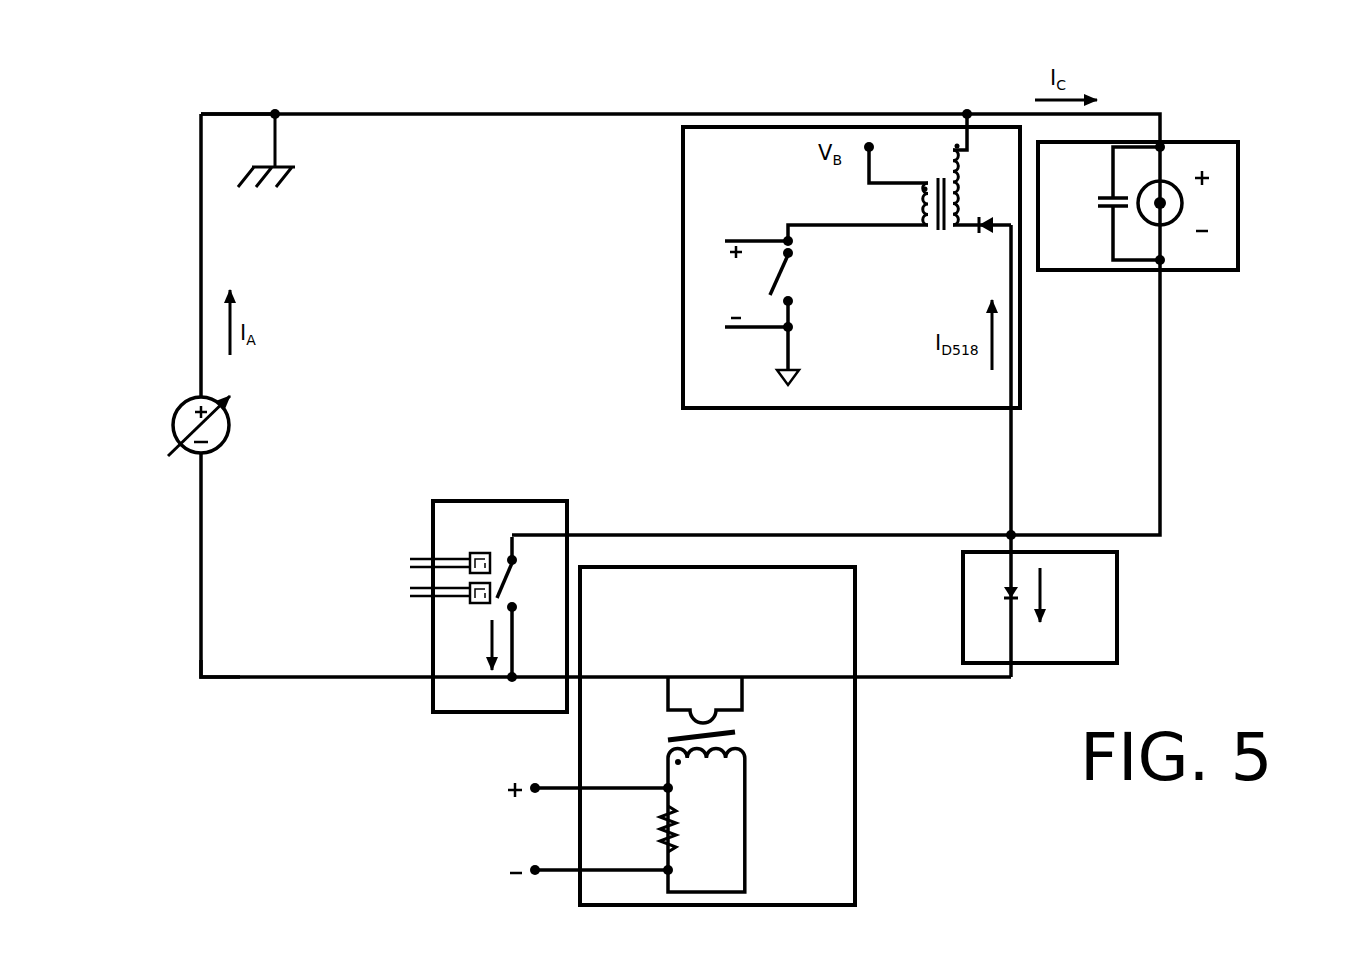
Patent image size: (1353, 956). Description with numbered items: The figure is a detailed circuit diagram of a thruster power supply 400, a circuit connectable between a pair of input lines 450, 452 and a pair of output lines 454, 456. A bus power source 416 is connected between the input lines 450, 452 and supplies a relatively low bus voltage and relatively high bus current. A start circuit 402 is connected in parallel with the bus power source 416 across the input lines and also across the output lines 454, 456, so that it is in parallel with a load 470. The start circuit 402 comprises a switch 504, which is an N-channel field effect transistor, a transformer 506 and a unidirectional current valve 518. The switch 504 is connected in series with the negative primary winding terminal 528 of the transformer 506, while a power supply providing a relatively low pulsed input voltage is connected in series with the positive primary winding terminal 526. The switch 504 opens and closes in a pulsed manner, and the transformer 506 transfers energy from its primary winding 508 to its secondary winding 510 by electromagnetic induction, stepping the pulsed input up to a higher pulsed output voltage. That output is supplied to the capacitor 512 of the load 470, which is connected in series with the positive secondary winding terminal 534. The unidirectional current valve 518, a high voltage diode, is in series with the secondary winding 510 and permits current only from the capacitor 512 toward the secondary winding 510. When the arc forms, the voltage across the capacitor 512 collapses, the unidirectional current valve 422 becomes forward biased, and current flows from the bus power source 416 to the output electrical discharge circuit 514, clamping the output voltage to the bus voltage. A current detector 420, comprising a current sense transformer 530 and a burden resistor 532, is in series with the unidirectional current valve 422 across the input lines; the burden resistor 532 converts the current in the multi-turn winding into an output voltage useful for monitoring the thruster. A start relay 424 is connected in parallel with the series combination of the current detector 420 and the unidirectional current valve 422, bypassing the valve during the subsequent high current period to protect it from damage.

The thruster power supply 400 is at (312, 83).
The start circuit 402 is at (661, 213).
The bus power source 416 is at (216, 438).
The current detector 420 is at (717, 736).
The unidirectional current valve 422 is at (1121, 603).
The start relay 424 is at (433, 606).
The input line 450 is at (218, 104).
The input line 452 is at (230, 681).
The output line 454 is at (1176, 133).
The output line 456 is at (1172, 290).
The load 470 is at (1256, 206).
The switch 504 is at (779, 310).
The transformer 506 is at (948, 217).
The primary winding 508 is at (905, 204).
The secondary winding 510 is at (984, 184).
The capacitor 512 is at (1105, 203).
The output electrical discharge circuit 514 is at (1176, 219).
The unidirectional current valve 518 is at (979, 240).
The positive primary winding terminal 526 is at (927, 145).
The negative primary winding terminal 528 is at (912, 230).
The current sense transformer 530 is at (722, 809).
The burden resistor 532 is at (550, 829).
The positive secondary winding terminal 534 is at (730, 690).